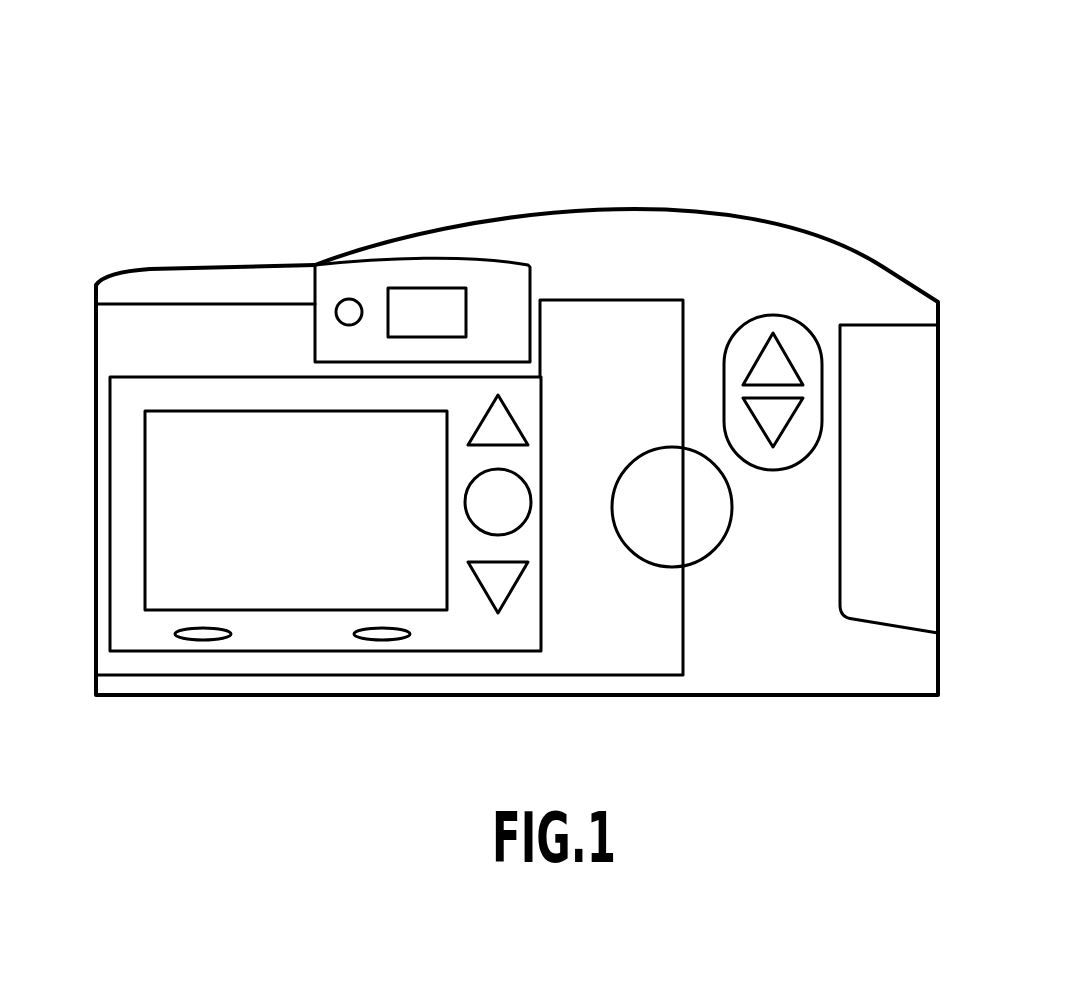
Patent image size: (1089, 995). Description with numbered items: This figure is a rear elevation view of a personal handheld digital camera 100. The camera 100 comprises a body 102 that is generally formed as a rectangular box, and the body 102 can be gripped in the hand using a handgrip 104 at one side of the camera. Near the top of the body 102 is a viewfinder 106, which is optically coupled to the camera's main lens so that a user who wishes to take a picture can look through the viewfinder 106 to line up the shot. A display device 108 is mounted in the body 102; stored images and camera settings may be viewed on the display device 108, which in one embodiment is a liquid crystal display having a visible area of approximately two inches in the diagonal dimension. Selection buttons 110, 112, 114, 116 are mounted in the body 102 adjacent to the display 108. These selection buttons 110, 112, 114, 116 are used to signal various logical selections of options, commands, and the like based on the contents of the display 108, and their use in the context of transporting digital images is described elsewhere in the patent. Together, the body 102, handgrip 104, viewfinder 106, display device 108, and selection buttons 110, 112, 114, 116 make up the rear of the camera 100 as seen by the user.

The personal handheld digital camera 100 is at (656, 182).
The body 102 is at (787, 228).
The handgrip 104 is at (912, 448).
The viewfinder 106 is at (396, 288).
The display device 108 is at (300, 519).
The selection button 110 is at (521, 568).
The selection button 112 is at (512, 510).
The selection button 114 is at (195, 640).
The selection button 116 is at (377, 640).